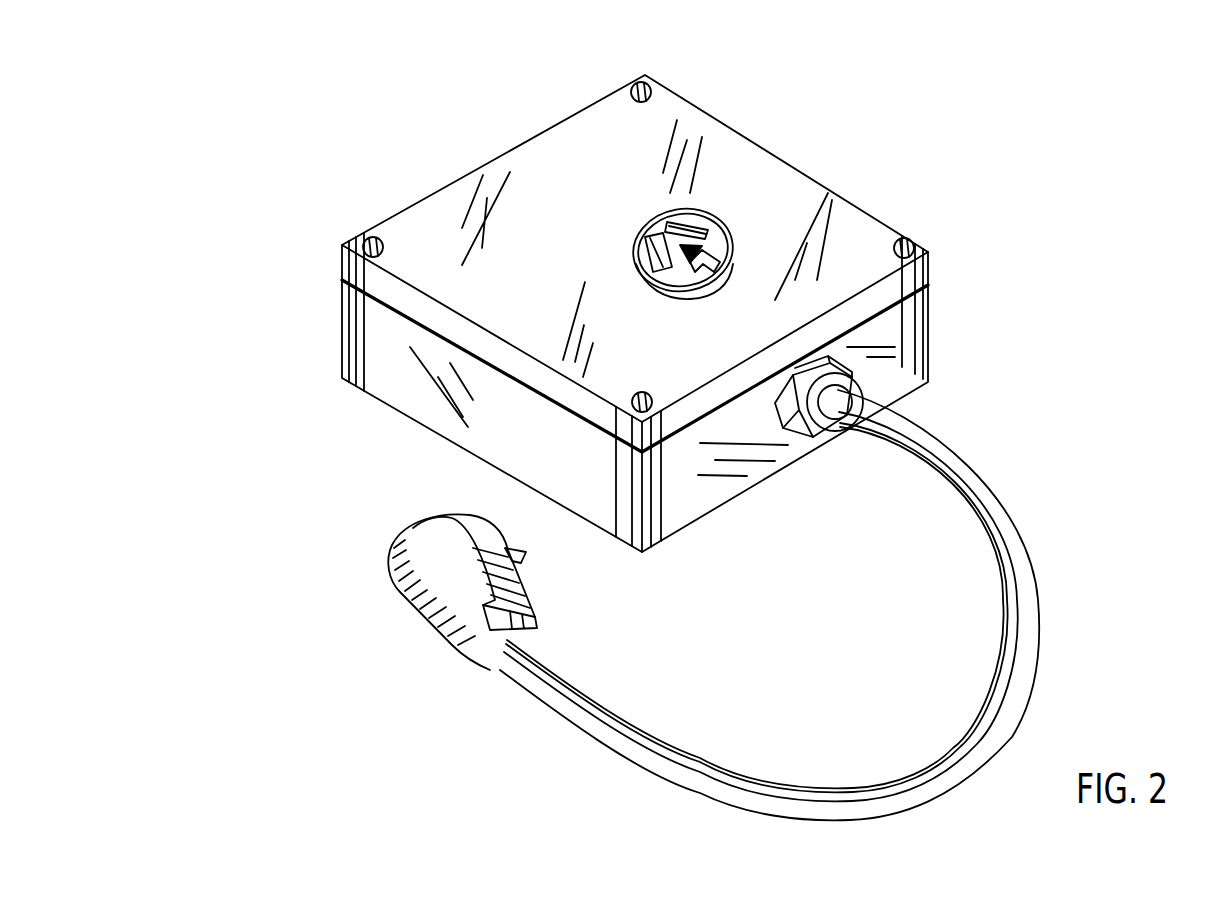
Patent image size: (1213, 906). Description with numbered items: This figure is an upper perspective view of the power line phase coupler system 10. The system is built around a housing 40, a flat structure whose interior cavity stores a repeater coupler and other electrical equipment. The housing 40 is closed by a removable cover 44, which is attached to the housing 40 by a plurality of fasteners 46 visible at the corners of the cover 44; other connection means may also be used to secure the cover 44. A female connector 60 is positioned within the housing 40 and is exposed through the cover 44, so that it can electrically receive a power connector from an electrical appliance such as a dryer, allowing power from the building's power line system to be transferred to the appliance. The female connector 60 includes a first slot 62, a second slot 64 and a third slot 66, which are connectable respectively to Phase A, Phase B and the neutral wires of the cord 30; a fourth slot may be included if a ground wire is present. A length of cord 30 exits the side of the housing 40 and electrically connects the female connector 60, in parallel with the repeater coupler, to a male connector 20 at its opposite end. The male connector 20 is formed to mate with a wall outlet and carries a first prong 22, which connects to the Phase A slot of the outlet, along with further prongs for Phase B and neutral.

The power line phase coupler system 10 is at (312, 139).
The male connector 20 is at (537, 607).
The first prong 22 is at (525, 553).
The cord 30 is at (695, 773).
The housing 40 is at (930, 314).
The removable cover 44 is at (843, 214).
The fasteners 46 is at (648, 86).
The female connector 60 is at (722, 226).
The first slot 62 is at (686, 226).
The second slot 64 is at (645, 251).
The third slot 66 is at (688, 268).